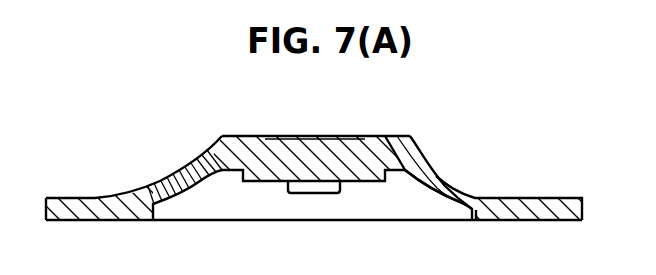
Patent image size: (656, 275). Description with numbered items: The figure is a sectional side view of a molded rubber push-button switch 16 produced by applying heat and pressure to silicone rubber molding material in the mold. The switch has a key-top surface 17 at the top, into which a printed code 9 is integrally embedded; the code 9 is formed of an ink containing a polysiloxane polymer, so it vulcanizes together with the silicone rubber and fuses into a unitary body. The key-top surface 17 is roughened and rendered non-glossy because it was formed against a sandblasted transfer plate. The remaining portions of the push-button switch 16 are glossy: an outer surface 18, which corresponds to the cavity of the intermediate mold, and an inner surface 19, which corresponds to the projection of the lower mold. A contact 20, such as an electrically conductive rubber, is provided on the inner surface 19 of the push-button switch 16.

The code 9 is at (302, 136).
The key-top surface 17 is at (257, 136).
The push-button switch 16 is at (420, 163).
The outer surface 18 is at (453, 184).
The inner surface 19 is at (433, 193).
The contact 20 is at (308, 193).